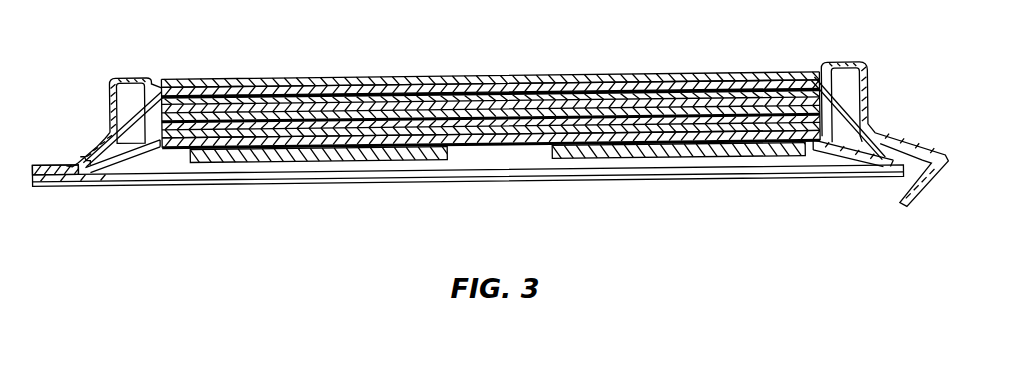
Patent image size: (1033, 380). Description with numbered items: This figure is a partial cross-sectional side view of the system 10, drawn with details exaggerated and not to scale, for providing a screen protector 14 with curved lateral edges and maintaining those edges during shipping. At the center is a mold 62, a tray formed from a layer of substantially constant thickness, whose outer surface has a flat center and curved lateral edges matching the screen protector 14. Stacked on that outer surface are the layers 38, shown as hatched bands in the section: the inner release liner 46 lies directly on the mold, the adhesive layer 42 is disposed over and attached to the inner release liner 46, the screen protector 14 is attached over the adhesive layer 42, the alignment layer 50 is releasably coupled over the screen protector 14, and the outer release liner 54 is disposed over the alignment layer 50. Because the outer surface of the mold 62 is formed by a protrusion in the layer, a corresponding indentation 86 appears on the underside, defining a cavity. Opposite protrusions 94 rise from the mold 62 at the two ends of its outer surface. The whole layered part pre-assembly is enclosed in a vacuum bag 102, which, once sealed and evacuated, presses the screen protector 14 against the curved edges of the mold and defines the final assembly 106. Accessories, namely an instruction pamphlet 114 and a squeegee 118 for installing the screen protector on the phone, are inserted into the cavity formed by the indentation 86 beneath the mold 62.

The system 10 is at (372, 192).
The screen protector 14 is at (295, 150).
The layers 38 is at (696, 128).
The adhesive layer 42 is at (615, 113).
The inner release liner 46 is at (654, 128).
The alignment layer 50 is at (590, 93).
The outer release liner 54 is at (642, 87).
The mold 62 is at (137, 153).
The indentation 86 is at (528, 157).
The protrusions 94 is at (845, 73).
The vacuum bag 102 is at (48, 160).
The final assembly 106 is at (508, 192).
The instruction pamphlet 114 is at (822, 172).
The squeegee 118 is at (440, 162).